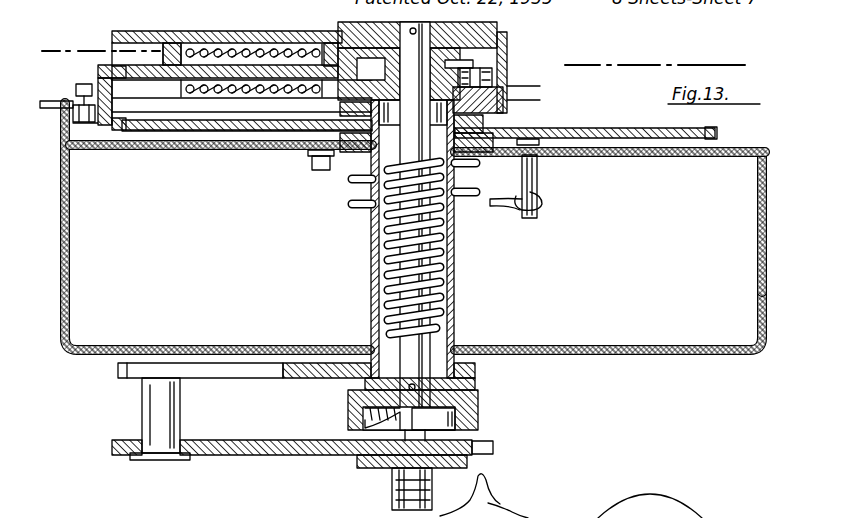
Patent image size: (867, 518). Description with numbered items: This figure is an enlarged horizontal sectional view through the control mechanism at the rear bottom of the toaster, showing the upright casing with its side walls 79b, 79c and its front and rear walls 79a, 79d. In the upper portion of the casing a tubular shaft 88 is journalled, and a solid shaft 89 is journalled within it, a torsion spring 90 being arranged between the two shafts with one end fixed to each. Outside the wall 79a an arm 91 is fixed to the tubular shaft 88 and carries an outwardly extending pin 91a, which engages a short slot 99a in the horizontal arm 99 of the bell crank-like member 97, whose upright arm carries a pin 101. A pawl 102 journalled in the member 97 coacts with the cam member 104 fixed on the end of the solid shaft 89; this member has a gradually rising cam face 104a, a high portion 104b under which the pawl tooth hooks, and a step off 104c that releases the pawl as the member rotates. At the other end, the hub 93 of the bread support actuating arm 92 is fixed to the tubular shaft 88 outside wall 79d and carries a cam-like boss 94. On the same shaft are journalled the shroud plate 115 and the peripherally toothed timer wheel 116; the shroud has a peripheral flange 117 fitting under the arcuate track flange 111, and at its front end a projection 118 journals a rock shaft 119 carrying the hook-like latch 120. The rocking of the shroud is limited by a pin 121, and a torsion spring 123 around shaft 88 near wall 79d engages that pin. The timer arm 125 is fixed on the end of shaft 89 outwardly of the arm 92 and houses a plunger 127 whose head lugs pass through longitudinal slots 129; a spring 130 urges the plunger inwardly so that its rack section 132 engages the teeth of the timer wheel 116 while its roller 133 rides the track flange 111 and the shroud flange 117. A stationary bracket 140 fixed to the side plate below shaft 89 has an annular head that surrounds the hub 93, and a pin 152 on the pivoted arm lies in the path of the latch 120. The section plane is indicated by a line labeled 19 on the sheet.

The section line 19- 19 is at (75, 30).
The front wall 79a is at (672, 350).
The side wall 79b is at (68, 282).
The side wall 79c is at (767, 240).
The rear wall 79d is at (667, 158).
The tubular shaft 88 is at (455, 298).
The solid shaft 89 is at (432, 356).
The torsion spring 90 is at (444, 270).
The arm 91 is at (276, 362).
The pin 91a is at (180, 408).
The bread support actuating arm 92 is at (247, 108).
The hub 93 is at (472, 92).
The cam-like boss 94 is at (480, 60).
The bell crank-like member 97 is at (504, 466).
The horizontal arm 99 is at (240, 455).
The short slot 99a is at (140, 440).
The pin 101 is at (490, 46).
The pawl 102 is at (395, 476).
The cam member 104 is at (486, 414).
The rising cam face 104a is at (366, 411).
The high portion 104b is at (460, 432).
The step off 104c is at (365, 424).
The flange 111 is at (62, 122).
The shroud plate 115 is at (152, 148).
The timer wheel 116 is at (272, 130).
The peripheral flange 117 is at (84, 128).
The projection 118 is at (110, 96).
The rock shaft 119 is at (522, 514).
The latch 120 is at (492, 500).
The pin 121 is at (323, 172).
The torsion spring 123 is at (352, 207).
The timer arm 125 is at (131, 26).
The plunger 127 is at (98, 74).
The longitudinal slots 129 is at (314, 58).
The spring 130 is at (258, 46).
The rack section 132 is at (118, 128).
The roller 133 is at (74, 105).
The stationary bracket 140 is at (541, 93).
The pin 152 is at (636, 516).